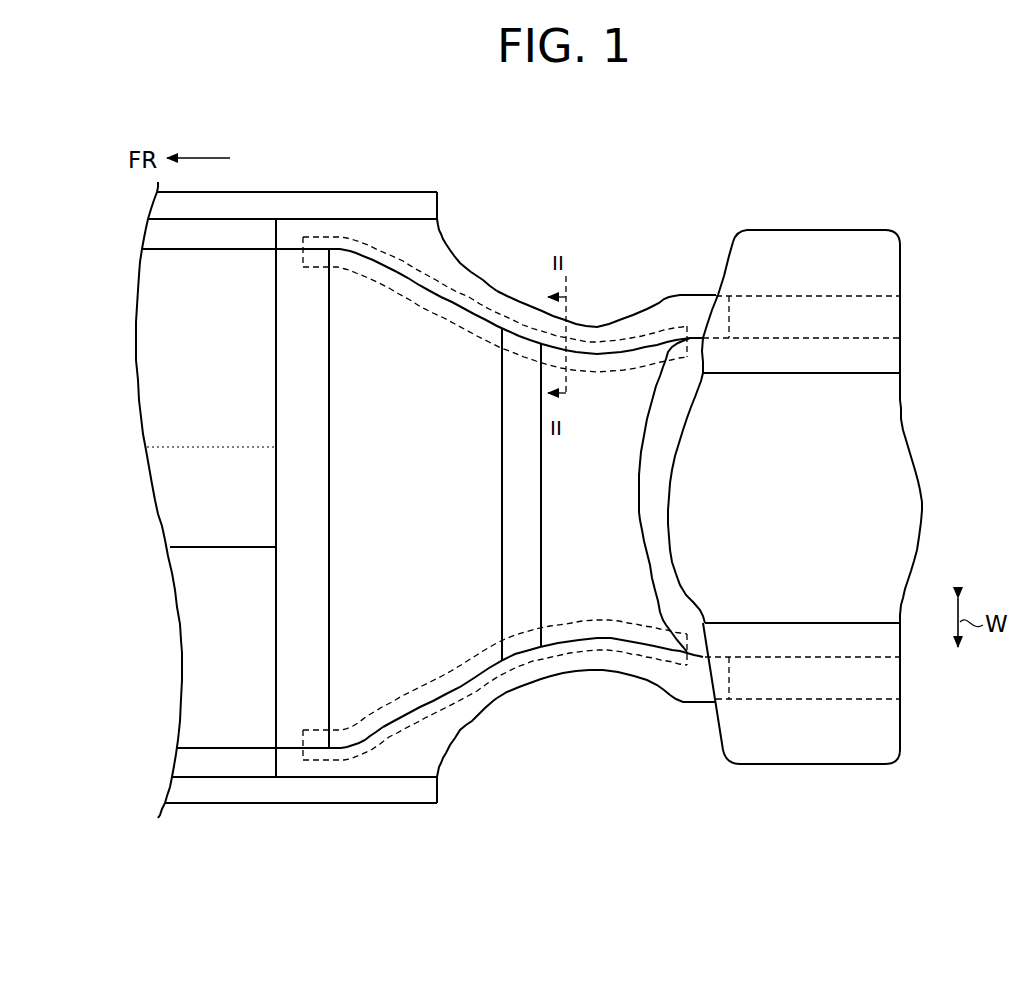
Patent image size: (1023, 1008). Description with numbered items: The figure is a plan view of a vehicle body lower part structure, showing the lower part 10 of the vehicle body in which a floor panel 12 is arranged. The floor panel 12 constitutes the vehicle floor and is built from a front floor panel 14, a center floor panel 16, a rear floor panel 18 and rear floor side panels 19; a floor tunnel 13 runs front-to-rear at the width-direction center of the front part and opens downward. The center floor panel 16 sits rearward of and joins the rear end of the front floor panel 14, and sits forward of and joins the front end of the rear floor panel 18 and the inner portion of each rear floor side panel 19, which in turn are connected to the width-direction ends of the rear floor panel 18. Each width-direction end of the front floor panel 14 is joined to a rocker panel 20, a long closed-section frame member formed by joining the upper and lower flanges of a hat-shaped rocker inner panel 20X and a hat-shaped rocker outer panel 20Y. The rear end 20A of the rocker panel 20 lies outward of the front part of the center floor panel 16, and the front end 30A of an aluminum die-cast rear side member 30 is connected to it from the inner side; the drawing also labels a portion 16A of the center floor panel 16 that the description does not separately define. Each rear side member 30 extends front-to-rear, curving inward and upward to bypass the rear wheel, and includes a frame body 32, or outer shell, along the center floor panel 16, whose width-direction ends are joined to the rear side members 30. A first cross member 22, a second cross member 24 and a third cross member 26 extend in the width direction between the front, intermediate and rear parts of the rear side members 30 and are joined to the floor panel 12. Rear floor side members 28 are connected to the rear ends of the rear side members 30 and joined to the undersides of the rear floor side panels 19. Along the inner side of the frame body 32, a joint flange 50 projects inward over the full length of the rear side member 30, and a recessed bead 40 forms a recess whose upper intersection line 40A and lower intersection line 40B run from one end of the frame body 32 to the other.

The lower part of the vehicle body 10 is at (640, 208).
The floor panel 12 is at (448, 348).
The floor tunnel 13 is at (224, 527).
The front floor panel 14 is at (202, 618).
The center floor panel 16 is at (450, 653).
The member outer wall end portion 16A is at (410, 740).
The rear floor panel 18 is at (900, 527).
The rear floor side panels 19 is at (888, 260).
The rocker panel 20 is at (322, 191).
The rear end of the rocker panel 20A is at (372, 215).
The rocker inner panel 20X is at (188, 237).
The rocker outer panel 20Y is at (255, 204).
The first cross member 22 is at (318, 594).
The second cross member 24 is at (527, 598).
The third cross member 26 is at (673, 580).
The rear floor side members 28 is at (807, 287).
The rear side member 30 is at (486, 324).
The front end of the rear side member 30A is at (343, 253).
The frame body 32 is at (523, 317).
The recessed bead 40 is at (637, 344).
The upper intersection line 40A is at (603, 344).
The lower intersection line 40B is at (496, 507).
The joint flange 50 is at (597, 376).